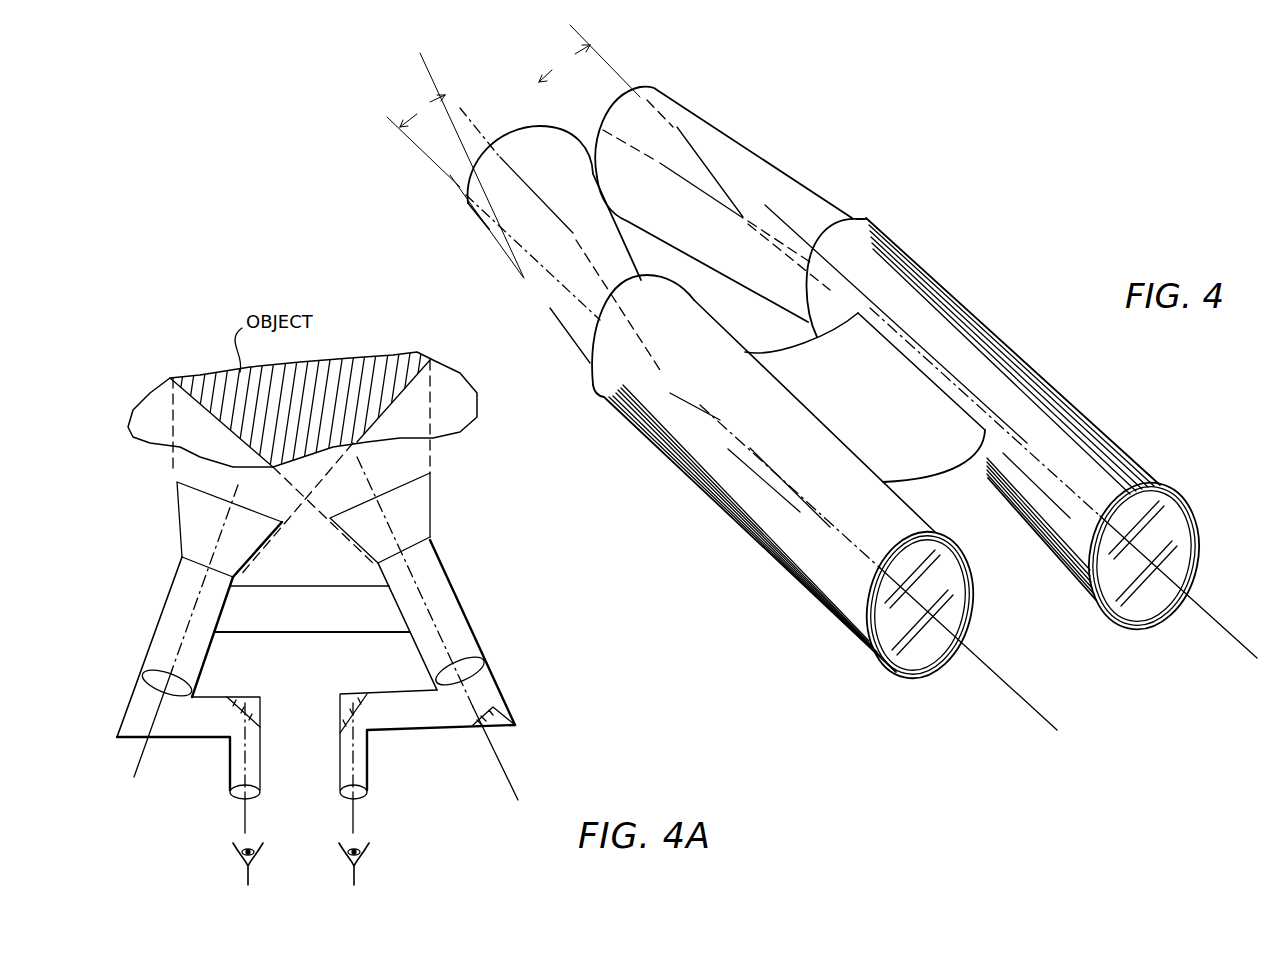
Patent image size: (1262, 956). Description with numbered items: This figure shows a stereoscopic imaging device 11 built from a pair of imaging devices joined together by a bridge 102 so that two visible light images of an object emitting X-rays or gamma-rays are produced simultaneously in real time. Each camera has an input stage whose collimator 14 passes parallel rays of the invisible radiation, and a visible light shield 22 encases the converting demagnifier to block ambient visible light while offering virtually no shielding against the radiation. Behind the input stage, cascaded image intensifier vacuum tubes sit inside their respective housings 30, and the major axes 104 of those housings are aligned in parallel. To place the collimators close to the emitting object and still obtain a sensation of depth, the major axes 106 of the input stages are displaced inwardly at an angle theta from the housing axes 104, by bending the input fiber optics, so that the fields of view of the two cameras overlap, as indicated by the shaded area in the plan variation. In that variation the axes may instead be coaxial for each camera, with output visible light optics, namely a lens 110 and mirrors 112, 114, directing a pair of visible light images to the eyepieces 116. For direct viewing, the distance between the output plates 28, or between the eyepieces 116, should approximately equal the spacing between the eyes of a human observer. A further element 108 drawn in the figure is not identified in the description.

In FIG. 4, the stereoscopic imaging device 11 is at (1025, 291).
In FIG. 4, the collimator 14 is at (498, 233).
In FIG. 4A, the collimator 14 is at (430, 512).
In FIG. 4, the visible light shield 22 is at (577, 320).
In FIG. 4, the output plate 28 is at (960, 648).
In FIG. 4, the vacuum tube housing 30 is at (1050, 380).
In FIG. 4A, the vacuum tube housing 30 is at (188, 593).
In FIG. 4, the bridge 102 is at (968, 480).
In FIG. 4A, the bridge 102 is at (228, 637).
In FIG. 4, the major axis of vacuum tube housing 104 is at (1261, 598).
In FIG. 4A, the major axis of vacuum tube housing 104 is at (183, 631).
In FIG. 4, the major axis of input stage 106 is at (510, 130).
In FIG. 4A, the major axis of input stage 106 is at (177, 481).
In FIG. 4A, the eyepiece 108 is at (245, 823).
In FIG. 4A, the lens 110 is at (153, 693).
In FIG. 4A, the mirror 112 is at (488, 697).
In FIG. 4A, the mirror 114 is at (392, 692).
In FIG. 4A, the eyepiece 116 is at (367, 802).